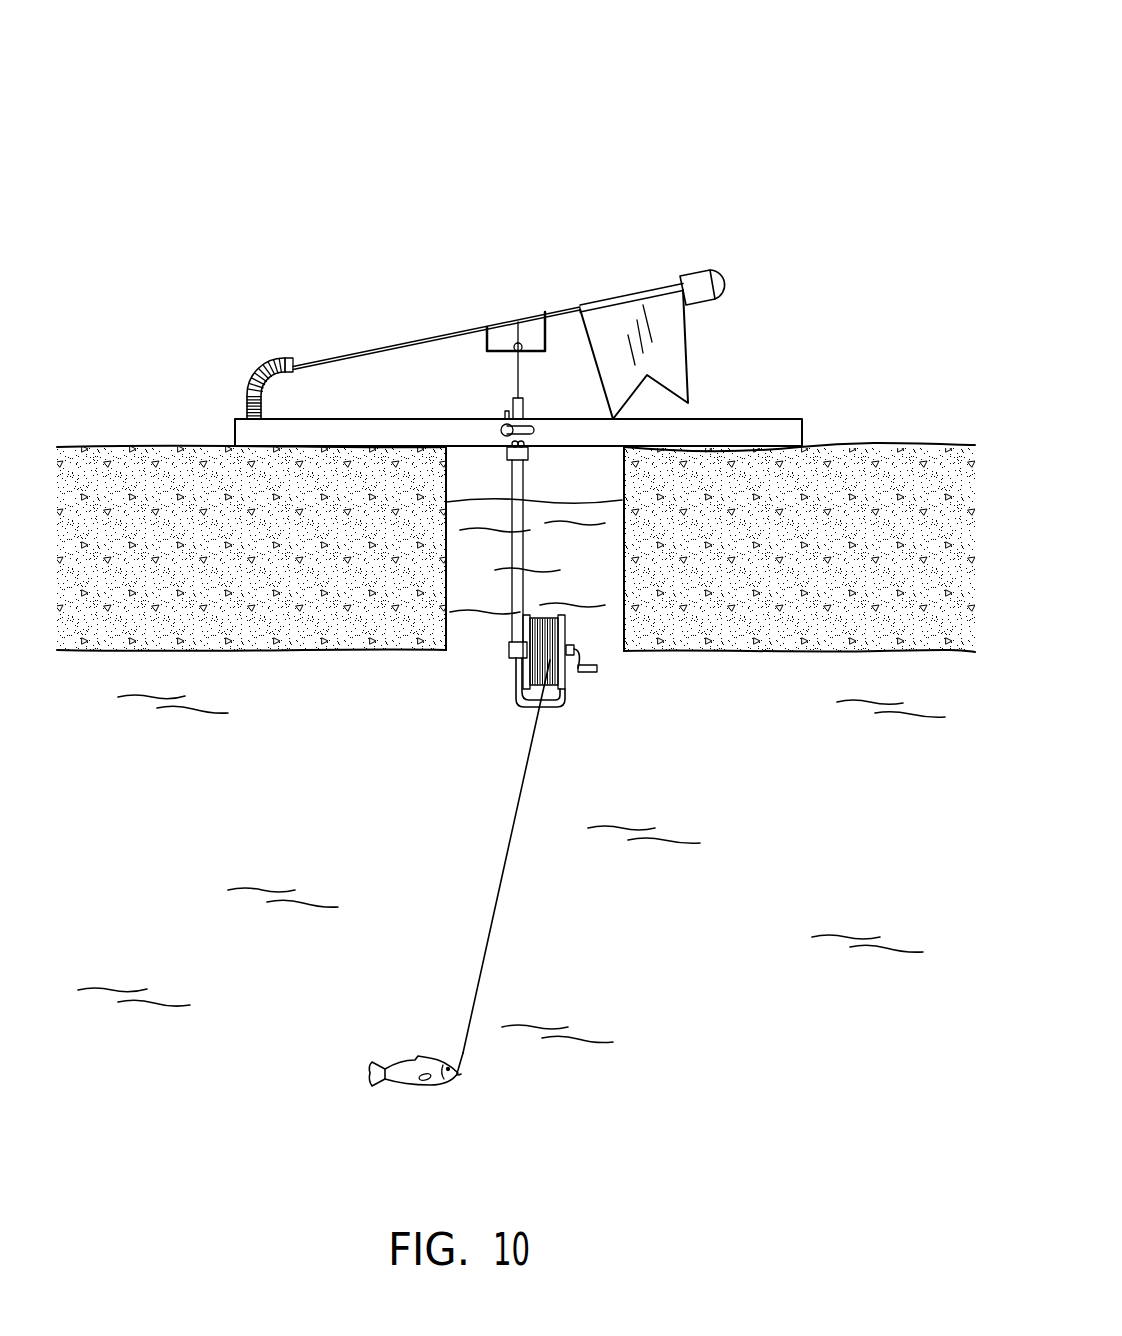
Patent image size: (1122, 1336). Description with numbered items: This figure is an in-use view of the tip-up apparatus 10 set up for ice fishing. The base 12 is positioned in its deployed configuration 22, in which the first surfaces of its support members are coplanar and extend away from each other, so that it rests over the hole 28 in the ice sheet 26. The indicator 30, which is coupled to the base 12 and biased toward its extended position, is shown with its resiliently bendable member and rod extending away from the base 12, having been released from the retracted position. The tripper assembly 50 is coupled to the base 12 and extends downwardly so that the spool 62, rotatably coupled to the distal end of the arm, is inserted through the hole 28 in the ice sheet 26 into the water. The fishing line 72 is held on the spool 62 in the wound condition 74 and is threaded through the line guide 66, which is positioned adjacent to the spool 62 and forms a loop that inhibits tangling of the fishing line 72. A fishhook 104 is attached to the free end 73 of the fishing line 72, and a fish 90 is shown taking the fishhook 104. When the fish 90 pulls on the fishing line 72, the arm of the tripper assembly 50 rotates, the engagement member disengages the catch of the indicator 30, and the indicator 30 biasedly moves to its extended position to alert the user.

The tip-up apparatus 10 is at (730, 107).
The base 12 is at (772, 407).
The deployed configuration 22 is at (817, 433).
The ice sheet 26 is at (853, 610).
The hole 28 is at (598, 563).
The indicator 30 is at (582, 267).
The tripper assembly 50 is at (519, 639).
The spool 62 is at (565, 622).
The line guide 66 is at (552, 703).
The fishing line 72 is at (548, 660).
The free end 73 is at (463, 1048).
The wound condition 74 is at (522, 715).
The fish 90 is at (413, 1083).
The fishhook 104 is at (463, 1067).